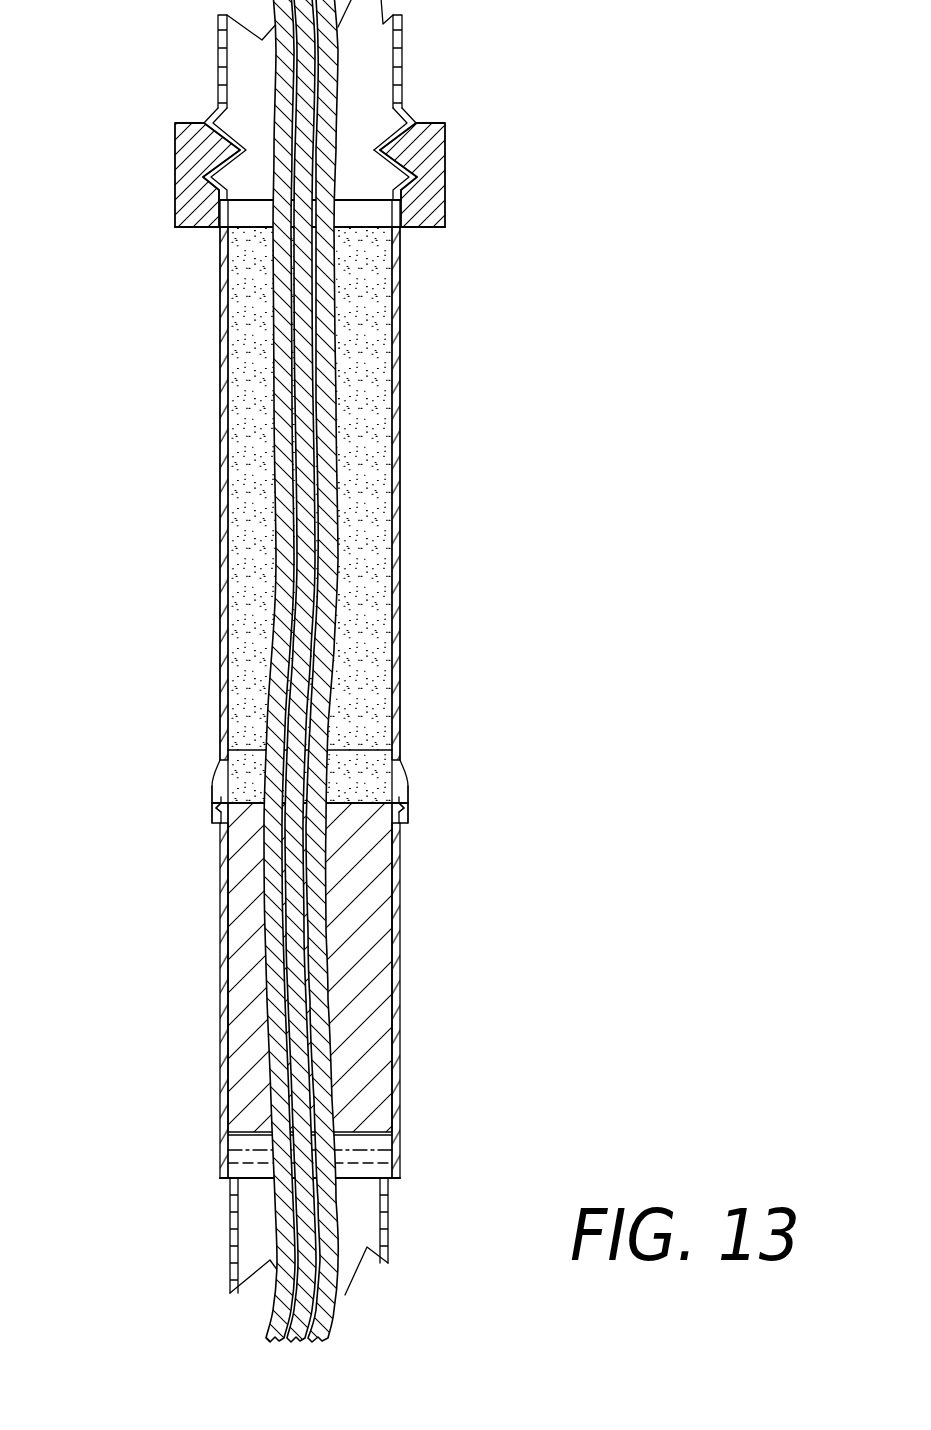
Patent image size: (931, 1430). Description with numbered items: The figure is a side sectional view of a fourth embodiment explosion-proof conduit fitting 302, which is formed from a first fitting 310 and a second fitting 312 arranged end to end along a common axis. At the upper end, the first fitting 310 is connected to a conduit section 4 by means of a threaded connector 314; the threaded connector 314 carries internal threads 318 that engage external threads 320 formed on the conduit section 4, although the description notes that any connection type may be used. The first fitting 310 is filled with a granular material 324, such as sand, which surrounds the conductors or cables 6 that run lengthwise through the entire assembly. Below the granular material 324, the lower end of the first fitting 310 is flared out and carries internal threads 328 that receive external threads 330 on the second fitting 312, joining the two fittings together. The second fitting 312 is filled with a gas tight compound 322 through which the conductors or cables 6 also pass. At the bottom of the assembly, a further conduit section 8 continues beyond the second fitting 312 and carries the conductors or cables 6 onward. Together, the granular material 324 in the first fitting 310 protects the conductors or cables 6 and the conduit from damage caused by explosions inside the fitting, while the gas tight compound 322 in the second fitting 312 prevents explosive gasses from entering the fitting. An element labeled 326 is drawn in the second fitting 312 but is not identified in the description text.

The explosion-proof conduit fitting 302 is at (610, 84).
The conduit section 4 is at (226, 77).
The threaded connector 314 is at (185, 155).
The internal threads 318 is at (407, 125).
The external threads 320 is at (413, 173).
The first fitting 310 is at (222, 456).
The granular material 324 is at (380, 586).
The internal threads 328 is at (402, 792).
The external threads 330 is at (399, 808).
The gas tight compound 322 is at (418, 828).
The second fitting 312 is at (222, 886).
The conductors or cables 6 is at (322, 920).
The end cap 326 is at (240, 1153).
The conduit section 8 is at (230, 1243).